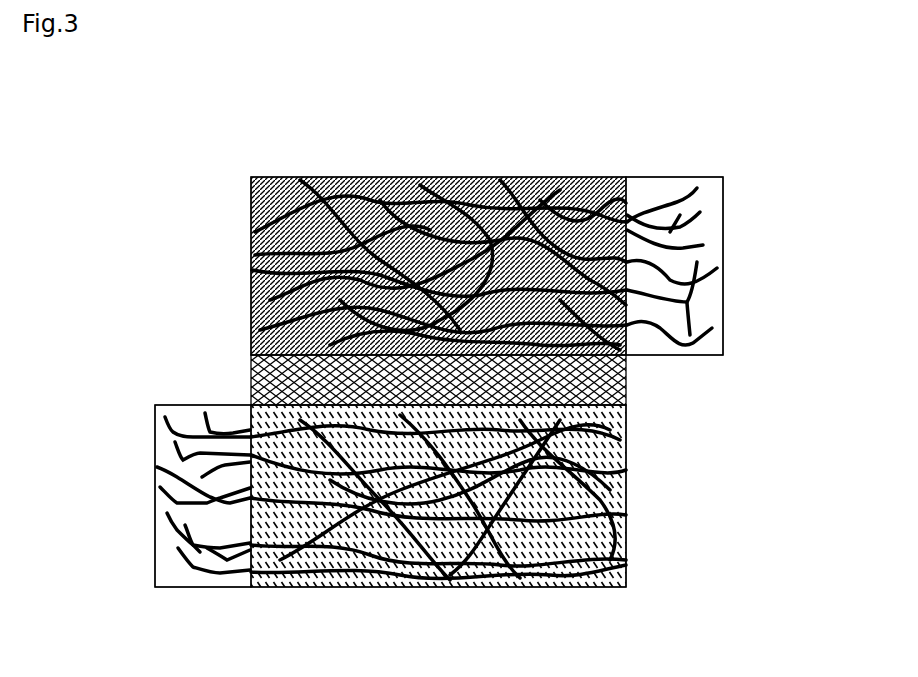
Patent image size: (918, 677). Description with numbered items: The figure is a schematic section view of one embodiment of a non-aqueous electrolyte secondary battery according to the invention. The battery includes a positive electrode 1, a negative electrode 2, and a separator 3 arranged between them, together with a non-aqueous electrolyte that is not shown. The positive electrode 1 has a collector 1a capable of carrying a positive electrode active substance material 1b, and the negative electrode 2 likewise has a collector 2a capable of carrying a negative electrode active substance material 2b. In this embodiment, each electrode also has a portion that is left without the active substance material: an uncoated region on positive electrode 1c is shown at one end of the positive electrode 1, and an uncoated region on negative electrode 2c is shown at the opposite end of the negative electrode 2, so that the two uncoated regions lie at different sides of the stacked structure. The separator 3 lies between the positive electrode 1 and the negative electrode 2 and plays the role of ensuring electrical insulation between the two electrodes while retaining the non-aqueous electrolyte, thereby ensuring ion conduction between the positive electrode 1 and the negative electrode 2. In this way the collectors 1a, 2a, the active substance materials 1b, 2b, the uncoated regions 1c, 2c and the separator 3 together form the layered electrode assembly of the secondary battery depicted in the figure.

The positive electrode 1 is at (745, 178).
The collector 1a is at (251, 295).
The positive electrode active substance material 1b is at (251, 229).
The uncoated region on positive electrode 1c is at (723, 157).
The negative electrode 2 is at (637, 407).
The collector 2a is at (170, 527).
The negative electrode active substance material 2b is at (251, 405).
The uncoated region on negative electrode 2c is at (250, 593).
The separator 3 is at (626, 393).